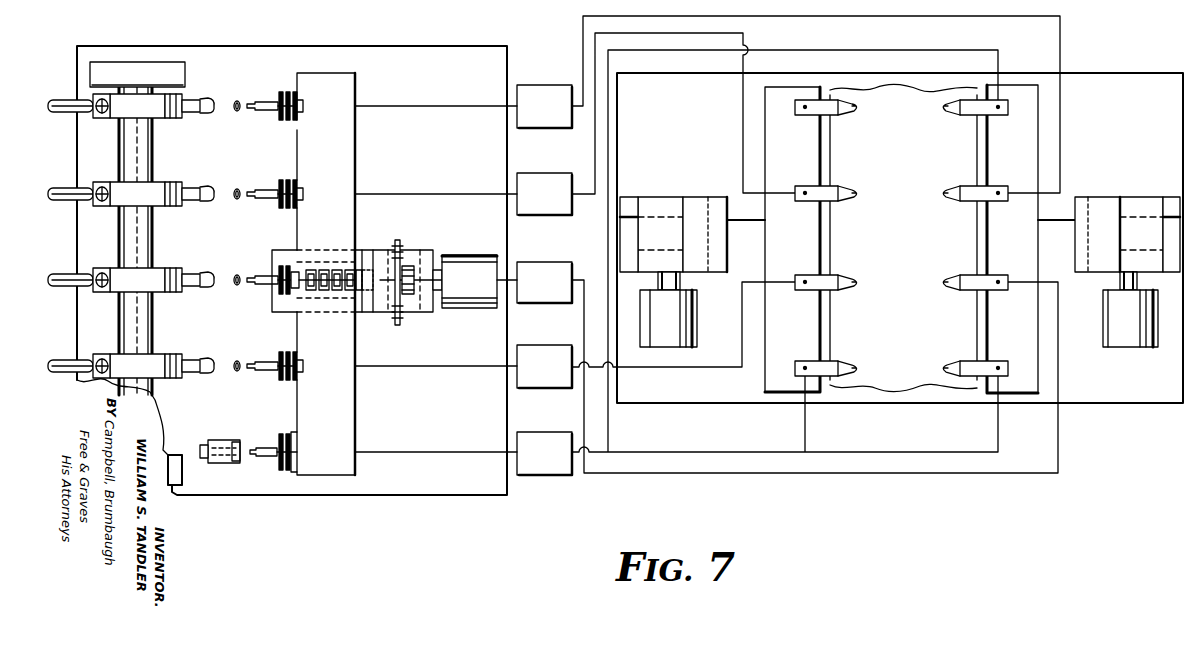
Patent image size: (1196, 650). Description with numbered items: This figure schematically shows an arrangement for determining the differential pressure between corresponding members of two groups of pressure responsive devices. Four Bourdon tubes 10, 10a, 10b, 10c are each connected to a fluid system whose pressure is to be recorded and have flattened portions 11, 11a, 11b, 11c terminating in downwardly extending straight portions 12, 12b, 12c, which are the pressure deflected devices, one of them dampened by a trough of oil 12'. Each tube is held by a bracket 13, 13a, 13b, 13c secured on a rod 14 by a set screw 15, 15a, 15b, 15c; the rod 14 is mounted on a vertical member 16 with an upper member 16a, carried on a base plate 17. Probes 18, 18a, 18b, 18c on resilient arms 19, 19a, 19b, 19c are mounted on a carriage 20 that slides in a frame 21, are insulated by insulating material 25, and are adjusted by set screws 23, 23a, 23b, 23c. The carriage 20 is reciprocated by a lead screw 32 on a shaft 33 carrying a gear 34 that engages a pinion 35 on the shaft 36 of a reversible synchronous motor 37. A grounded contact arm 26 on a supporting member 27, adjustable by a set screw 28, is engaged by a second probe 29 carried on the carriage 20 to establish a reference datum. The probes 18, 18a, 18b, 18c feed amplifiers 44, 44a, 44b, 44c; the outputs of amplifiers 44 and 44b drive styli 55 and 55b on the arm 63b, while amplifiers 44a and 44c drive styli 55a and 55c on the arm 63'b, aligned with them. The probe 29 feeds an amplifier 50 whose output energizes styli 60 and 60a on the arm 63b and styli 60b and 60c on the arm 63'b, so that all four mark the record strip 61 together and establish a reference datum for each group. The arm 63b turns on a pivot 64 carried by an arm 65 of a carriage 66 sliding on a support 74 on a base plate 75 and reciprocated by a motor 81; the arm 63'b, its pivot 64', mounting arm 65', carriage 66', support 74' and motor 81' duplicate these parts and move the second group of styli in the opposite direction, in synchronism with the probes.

The Bourdon tube 10 is at (58, 358).
The spray gun 10a is at (58, 272).
The spray gun 10b is at (58, 186).
The spray gun 10c is at (58, 98).
The flattened portion 11 is at (210, 373).
The nozzle 11a is at (208, 287).
The nozzle 11b is at (208, 201).
The nozzle 11c is at (208, 113).
The straight portion 12 is at (223, 349).
The trough of oil 12' is at (223, 263).
The pressure deflected device 12b is at (236, 188).
The pressure deflected device 12c is at (236, 100).
The bracket 13 is at (172, 378).
The gun body section 13a is at (172, 292).
The gun body section 13b is at (172, 206).
The gun body section 13c is at (172, 118).
The rod 14 is at (138, 333).
The set screw 15 is at (102, 354).
The clamp 15a is at (102, 292).
The clamp 15b is at (102, 206).
The clamp 15c is at (102, 118).
The vertical member 16 is at (176, 456).
The top cap 16a is at (130, 62).
The base plate 17 is at (416, 494).
The probe means 18 is at (256, 370).
The probe 18a is at (256, 284).
The probe 18b is at (256, 198).
The probe 18c is at (256, 110).
The arm 19 is at (278, 354).
The connector stack 19a is at (278, 266).
The connector stack 19b is at (278, 182).
The connector stack 19c is at (278, 94).
The carriage 20 is at (316, 466).
The frame 21 is at (416, 312).
The set screw 23 is at (302, 372).
The plug 23a is at (296, 290).
The plug 23b is at (300, 198).
The plug 23c is at (300, 110).
The insulating material 25 is at (298, 90).
The contact arm 26 is at (278, 436).
The supporting member 27 is at (228, 440).
The set screw 28 is at (212, 463).
The second probe means 29 is at (256, 456).
The lead screw 32 is at (314, 266).
The shaft 33 is at (364, 262).
The gear 34 is at (396, 320).
The pinion 35 is at (406, 270).
The shaft 36 is at (438, 290).
The reversible synchronous motor 37 is at (464, 262).
The amplifier 44 is at (540, 388).
The amplifier 44a is at (540, 303).
The amplifier 44b is at (540, 215).
The amplifier 44c is at (540, 128).
The amplifier 50 is at (540, 475).
The recording stylus 55 is at (852, 290).
The stylus 55a is at (950, 290).
The stylus 55b is at (852, 200).
The stylus 55c is at (950, 200).
The recording stylus 60 is at (854, 360).
The stylus 60a is at (852, 110).
The stylus 60b is at (950, 360).
The stylus 60c is at (950, 112).
The record strip 61 is at (908, 390).
The arm 63b is at (784, 392).
The arm 63'b is at (1031, 254).
The pivot 64 is at (708, 223).
The pivot 64' is at (1097, 223).
The arm 65 is at (694, 286).
The mounting arm 65' is at (1102, 286).
The carriage 66 is at (682, 223).
The carriage 66' is at (1153, 249).
The support 74 is at (634, 223).
The valve section 74' is at (1162, 223).
The base plate 75 is at (684, 403).
The reversible synchronous motor 81 is at (684, 318).
The motor 81' is at (1115, 318).